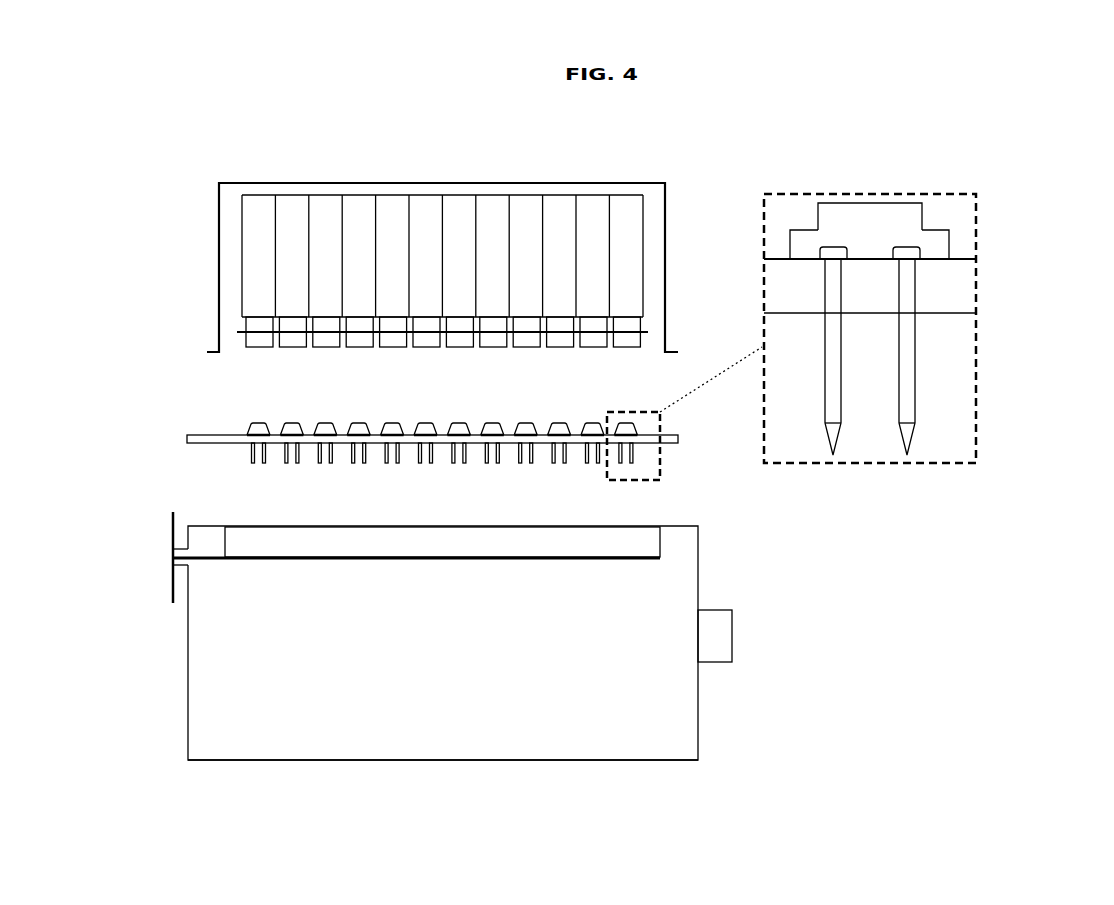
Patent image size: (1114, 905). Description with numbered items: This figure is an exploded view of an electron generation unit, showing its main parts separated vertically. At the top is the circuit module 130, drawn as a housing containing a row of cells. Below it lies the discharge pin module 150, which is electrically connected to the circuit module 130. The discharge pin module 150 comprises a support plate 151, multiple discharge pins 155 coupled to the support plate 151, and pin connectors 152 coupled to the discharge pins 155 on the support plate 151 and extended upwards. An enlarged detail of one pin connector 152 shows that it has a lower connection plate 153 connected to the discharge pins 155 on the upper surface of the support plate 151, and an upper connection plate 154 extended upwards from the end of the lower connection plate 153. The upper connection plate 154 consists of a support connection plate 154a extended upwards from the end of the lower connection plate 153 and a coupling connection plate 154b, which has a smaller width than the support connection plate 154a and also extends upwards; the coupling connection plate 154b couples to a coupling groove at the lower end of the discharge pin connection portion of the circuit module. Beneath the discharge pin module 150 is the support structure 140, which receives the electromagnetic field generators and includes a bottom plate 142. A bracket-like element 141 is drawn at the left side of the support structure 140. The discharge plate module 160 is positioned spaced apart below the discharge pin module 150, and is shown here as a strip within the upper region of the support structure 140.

The circuit module 130 is at (237, 248).
The support structure 140 is at (440, 676).
The side bracket 141 is at (182, 652).
The bottom plate 142 is at (350, 762).
The discharge pin module 150 is at (604, 285).
The support plate 151 is at (952, 288).
The pin connector 152 is at (924, 174).
The lower connection plate 153 is at (940, 258).
The upper connection plate 154 is at (943, 174).
The support connection plate 154a is at (938, 228).
The coupling connection plate 154b is at (898, 204).
The discharge pins 155 is at (907, 385).
The discharge plate module 160 is at (660, 543).